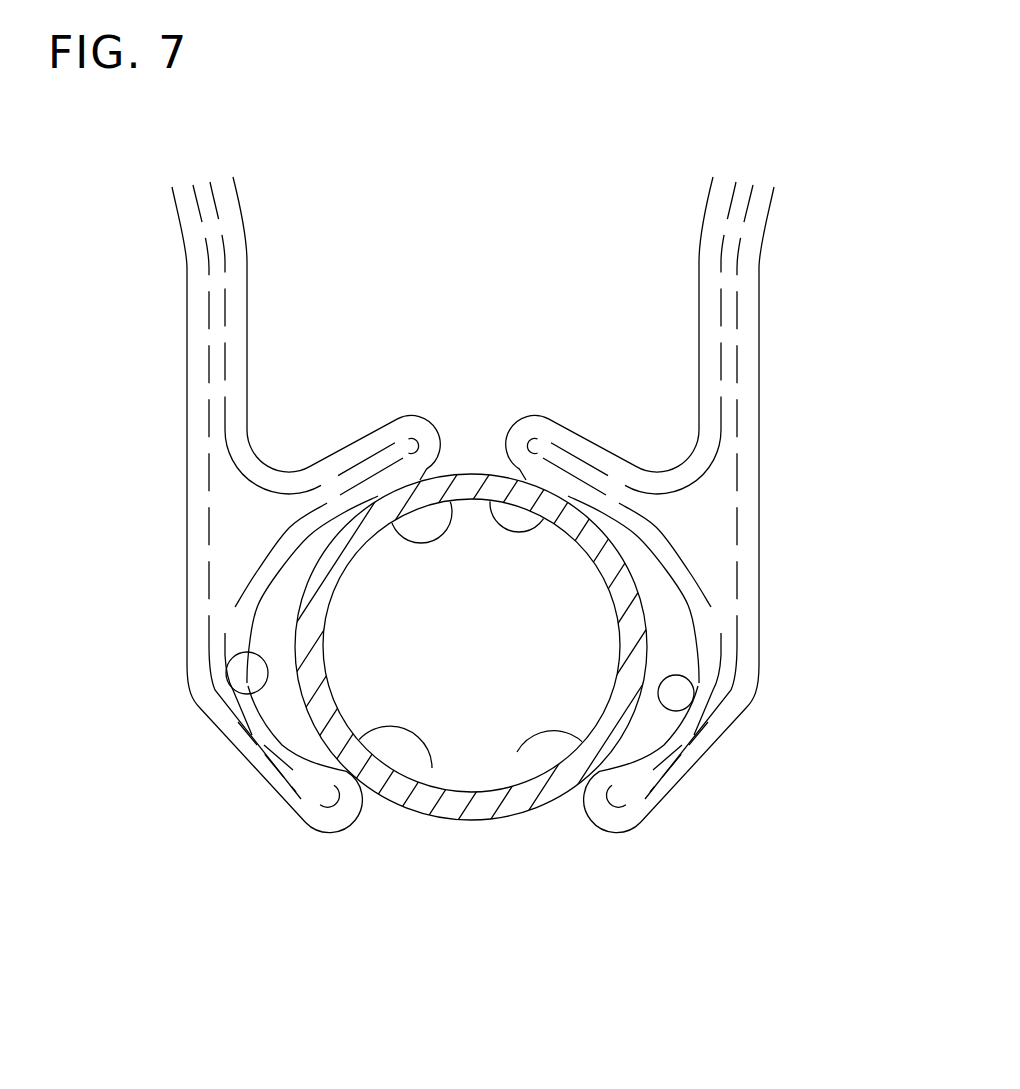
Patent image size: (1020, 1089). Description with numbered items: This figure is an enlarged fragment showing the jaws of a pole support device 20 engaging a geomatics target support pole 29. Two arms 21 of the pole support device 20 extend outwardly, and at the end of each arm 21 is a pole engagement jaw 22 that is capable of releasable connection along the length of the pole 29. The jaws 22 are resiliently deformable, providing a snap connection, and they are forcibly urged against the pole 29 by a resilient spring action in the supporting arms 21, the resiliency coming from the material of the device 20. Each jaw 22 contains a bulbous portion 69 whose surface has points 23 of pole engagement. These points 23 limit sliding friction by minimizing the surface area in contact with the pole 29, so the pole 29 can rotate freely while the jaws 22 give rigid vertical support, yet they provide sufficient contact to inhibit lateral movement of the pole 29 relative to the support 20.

The pole support device 20 is at (810, 233).
The arms 21 is at (187, 313).
The pole engagement jaws 22 is at (237, 529).
The points of pole engagement 23 is at (452, 512).
The geomatics target support pole 29 is at (527, 819).
The bulbous portion 69 is at (240, 666).